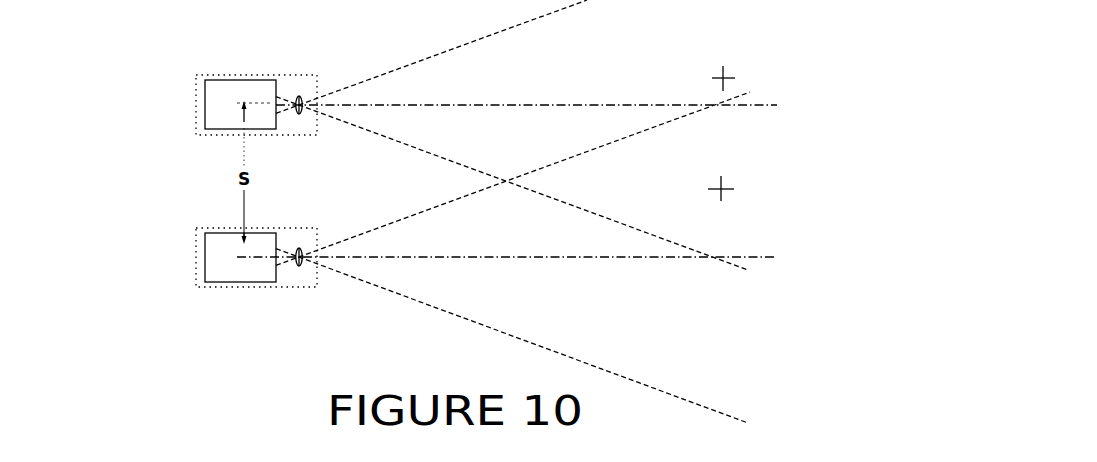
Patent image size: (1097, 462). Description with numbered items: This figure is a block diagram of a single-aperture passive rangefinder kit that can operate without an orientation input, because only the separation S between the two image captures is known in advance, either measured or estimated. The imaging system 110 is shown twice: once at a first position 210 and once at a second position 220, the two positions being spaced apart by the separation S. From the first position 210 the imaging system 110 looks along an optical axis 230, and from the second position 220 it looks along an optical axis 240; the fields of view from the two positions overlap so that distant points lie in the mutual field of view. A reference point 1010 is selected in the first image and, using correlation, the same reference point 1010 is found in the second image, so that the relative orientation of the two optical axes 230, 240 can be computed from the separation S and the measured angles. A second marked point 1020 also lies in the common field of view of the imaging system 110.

The imaging system 110 is at (247, 75).
The first position 210 is at (93, 83).
The second position 220 is at (100, 242).
The optical axis 230 is at (600, 107).
The optical axis 240 is at (615, 260).
The reference point 1010 is at (742, 79).
The second reference point 1020 is at (737, 190).